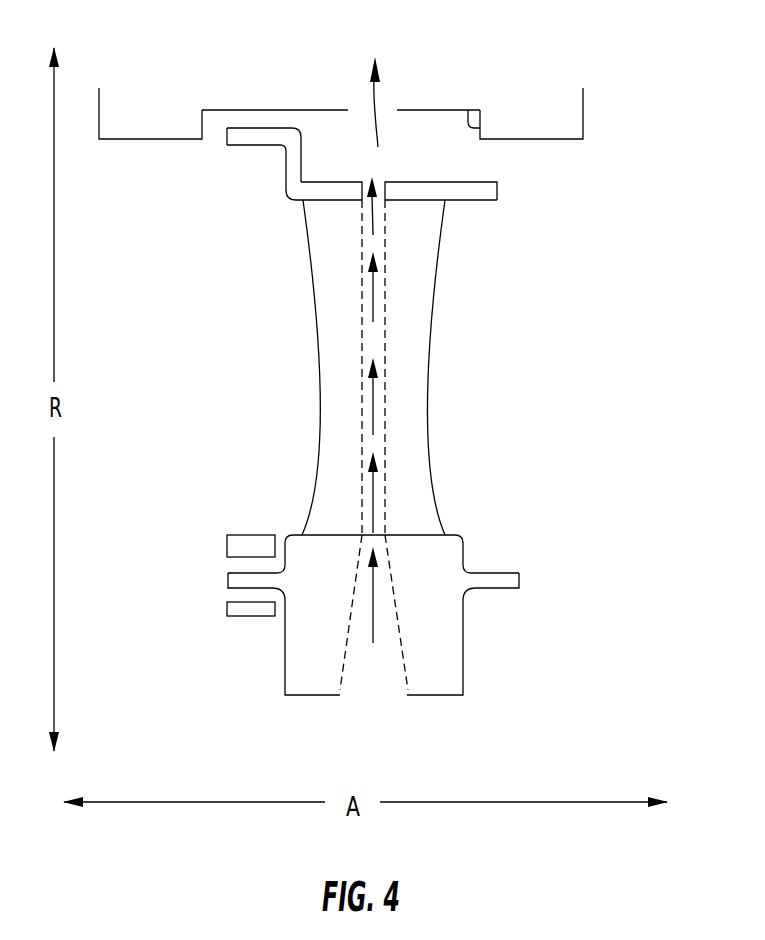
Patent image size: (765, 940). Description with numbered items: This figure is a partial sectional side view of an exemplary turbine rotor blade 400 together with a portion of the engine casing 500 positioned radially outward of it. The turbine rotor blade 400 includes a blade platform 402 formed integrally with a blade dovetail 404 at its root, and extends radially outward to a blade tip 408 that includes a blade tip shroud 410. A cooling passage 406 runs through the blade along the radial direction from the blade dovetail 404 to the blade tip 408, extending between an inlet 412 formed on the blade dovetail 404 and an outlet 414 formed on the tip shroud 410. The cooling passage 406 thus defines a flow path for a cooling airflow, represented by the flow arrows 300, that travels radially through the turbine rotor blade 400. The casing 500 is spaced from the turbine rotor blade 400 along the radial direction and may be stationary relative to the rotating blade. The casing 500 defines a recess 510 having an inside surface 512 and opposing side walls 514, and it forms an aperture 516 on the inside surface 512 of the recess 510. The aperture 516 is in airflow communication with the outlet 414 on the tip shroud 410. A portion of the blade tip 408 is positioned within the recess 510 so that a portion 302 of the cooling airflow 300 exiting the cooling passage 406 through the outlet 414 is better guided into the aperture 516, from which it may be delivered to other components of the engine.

The cooling airflow 300 is at (373, 603).
The portion of the cooling airflow 302 is at (380, 110).
The turbine rotor blade 400 is at (427, 393).
The blade platform 402 is at (442, 557).
The blade dovetail 404 is at (428, 660).
The cooling passage 406 is at (362, 318).
The blade tip 408 is at (421, 200).
The blade tip shroud 410 is at (488, 193).
The inlet 412 is at (370, 675).
The outlet 414 is at (373, 200).
The casing 500 is at (557, 100).
The recess 510 is at (433, 133).
The inside surface 512 is at (252, 110).
The side walls 514 is at (203, 125).
The aperture 516 is at (367, 122).